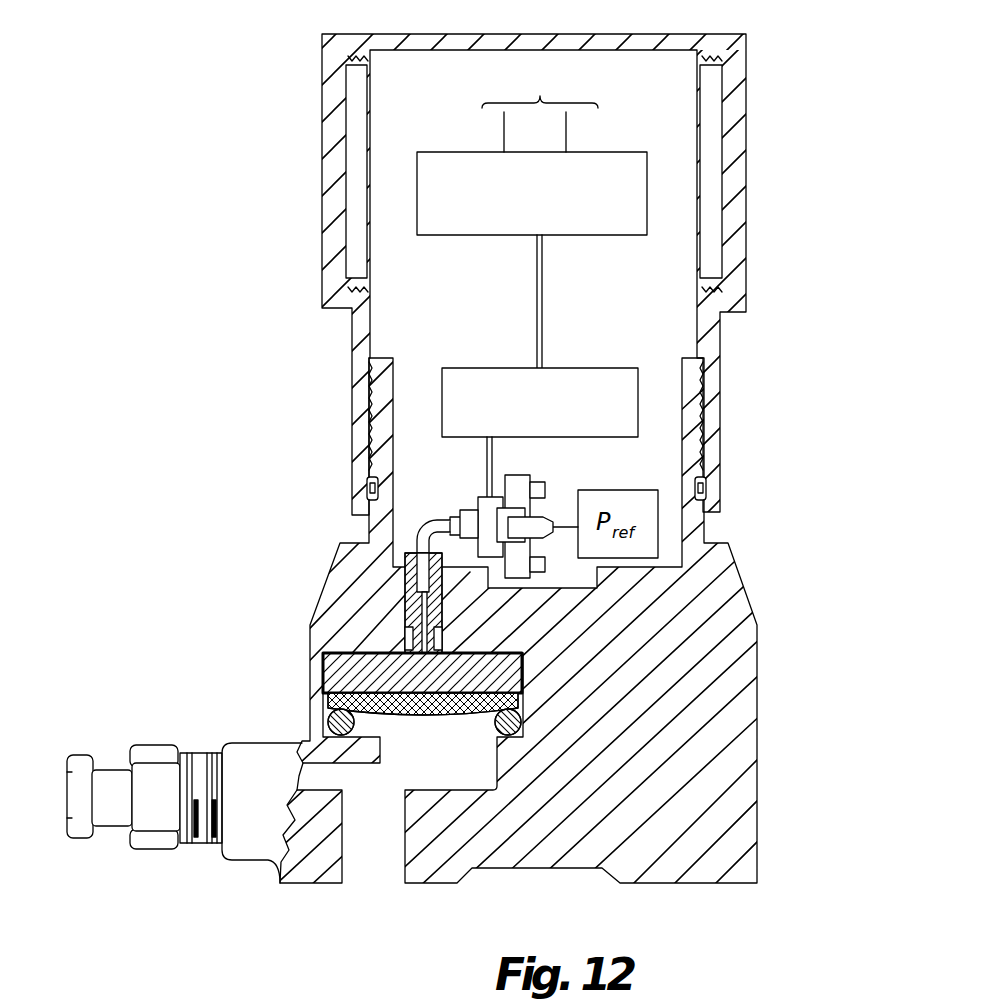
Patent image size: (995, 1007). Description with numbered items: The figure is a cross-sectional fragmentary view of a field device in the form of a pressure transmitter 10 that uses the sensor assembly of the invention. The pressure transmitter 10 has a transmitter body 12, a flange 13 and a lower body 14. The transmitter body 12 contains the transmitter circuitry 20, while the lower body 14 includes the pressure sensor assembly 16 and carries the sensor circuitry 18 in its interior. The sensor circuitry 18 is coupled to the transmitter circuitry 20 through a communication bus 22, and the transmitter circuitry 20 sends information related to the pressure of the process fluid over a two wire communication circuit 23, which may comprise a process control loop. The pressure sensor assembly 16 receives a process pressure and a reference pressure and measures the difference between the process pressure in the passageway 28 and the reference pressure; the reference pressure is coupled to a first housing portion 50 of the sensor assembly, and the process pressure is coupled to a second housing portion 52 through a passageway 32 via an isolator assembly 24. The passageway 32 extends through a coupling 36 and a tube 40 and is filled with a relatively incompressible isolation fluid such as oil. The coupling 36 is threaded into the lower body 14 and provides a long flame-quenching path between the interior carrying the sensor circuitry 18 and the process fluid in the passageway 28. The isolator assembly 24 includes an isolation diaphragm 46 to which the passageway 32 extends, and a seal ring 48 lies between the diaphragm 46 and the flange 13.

The pressure transmitter 10 is at (795, 188).
The transmitter body 12 is at (746, 92).
The flange 13 is at (242, 847).
The lower body 14 is at (727, 577).
The pressure sensor assembly 16 is at (473, 503).
The sensor circuitry 18 is at (638, 395).
The transmitter circuitry 20 is at (608, 152).
The communication bus 22 is at (542, 250).
The two wire communication circuit 23 is at (566, 135).
The isolator assembly 24 is at (323, 673).
The passageway 28 is at (392, 808).
The passageway 32 is at (406, 580).
The coupling 36 is at (423, 607).
The tube 40 is at (433, 518).
The isolation diaphragm 46 is at (328, 695).
The seal ring 48 is at (324, 724).
The first housing portion 50 is at (522, 475).
The second housing portion 52 is at (478, 497).